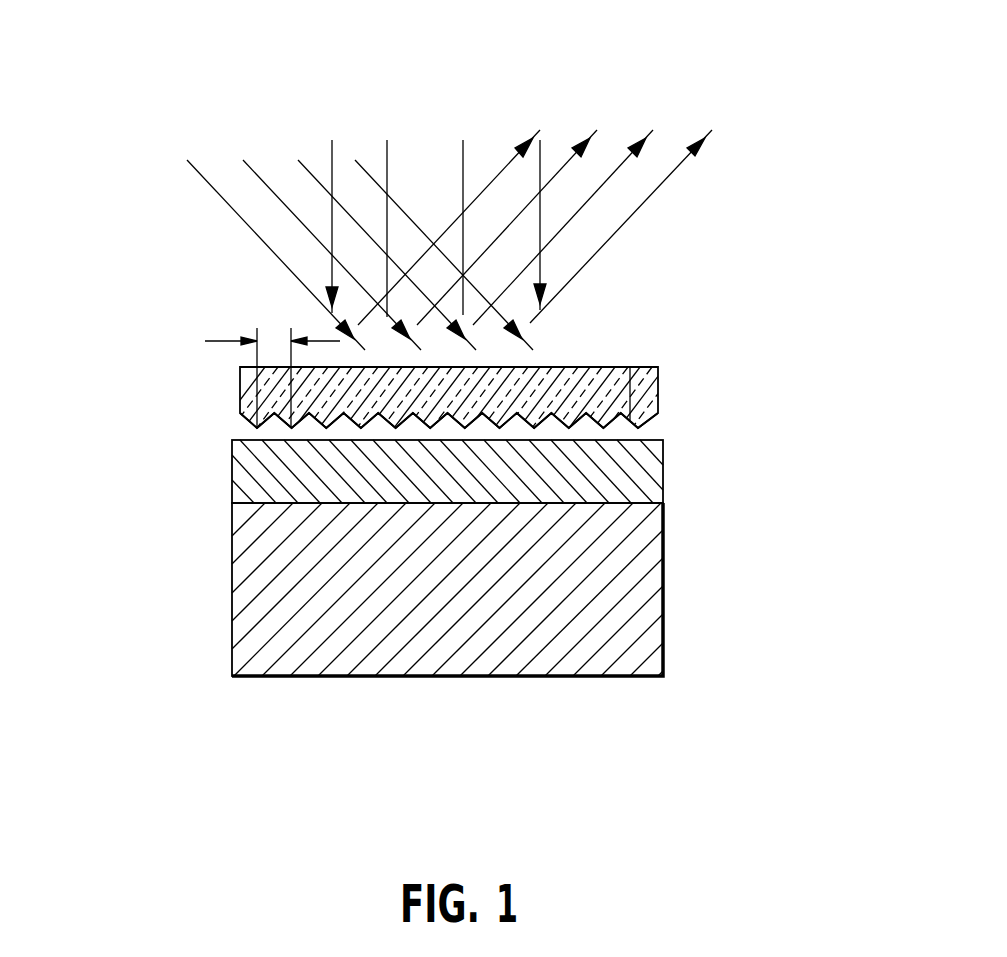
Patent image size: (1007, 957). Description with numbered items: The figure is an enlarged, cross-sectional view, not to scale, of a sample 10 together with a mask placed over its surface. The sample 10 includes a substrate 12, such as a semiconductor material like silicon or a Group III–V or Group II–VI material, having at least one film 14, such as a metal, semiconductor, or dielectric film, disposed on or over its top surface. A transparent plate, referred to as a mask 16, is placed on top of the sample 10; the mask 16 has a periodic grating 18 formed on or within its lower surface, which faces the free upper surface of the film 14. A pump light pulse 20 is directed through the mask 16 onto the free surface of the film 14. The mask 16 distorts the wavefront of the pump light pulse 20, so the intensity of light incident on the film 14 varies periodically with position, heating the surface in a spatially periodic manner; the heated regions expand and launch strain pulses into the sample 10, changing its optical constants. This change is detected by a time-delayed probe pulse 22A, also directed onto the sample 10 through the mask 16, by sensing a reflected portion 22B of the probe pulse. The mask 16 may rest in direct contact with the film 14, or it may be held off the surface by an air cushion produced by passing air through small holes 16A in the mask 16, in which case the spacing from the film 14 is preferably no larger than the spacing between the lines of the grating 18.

The sample 10 is at (780, 236).
The substrate 12 is at (653, 600).
The film 14 is at (655, 483).
The mask 16 is at (655, 385).
The small holes 16A is at (632, 365).
The periodic grating 18 is at (265, 431).
The pump light pulse 20 is at (436, 177).
The probe pulse 22A is at (292, 225).
The reflected portion of the probe pulse 22B is at (610, 188).